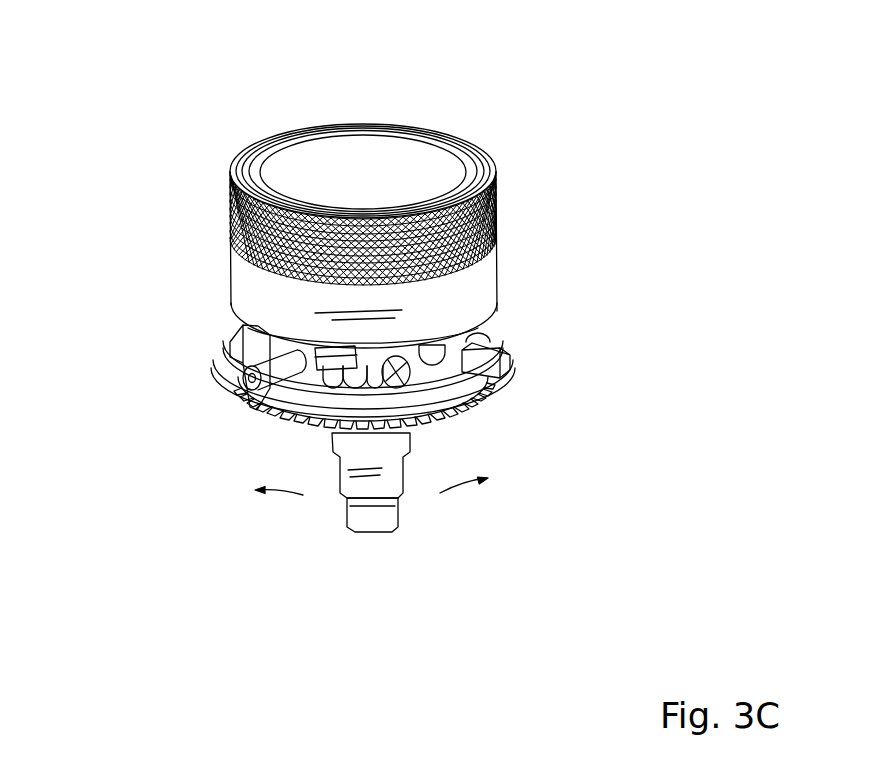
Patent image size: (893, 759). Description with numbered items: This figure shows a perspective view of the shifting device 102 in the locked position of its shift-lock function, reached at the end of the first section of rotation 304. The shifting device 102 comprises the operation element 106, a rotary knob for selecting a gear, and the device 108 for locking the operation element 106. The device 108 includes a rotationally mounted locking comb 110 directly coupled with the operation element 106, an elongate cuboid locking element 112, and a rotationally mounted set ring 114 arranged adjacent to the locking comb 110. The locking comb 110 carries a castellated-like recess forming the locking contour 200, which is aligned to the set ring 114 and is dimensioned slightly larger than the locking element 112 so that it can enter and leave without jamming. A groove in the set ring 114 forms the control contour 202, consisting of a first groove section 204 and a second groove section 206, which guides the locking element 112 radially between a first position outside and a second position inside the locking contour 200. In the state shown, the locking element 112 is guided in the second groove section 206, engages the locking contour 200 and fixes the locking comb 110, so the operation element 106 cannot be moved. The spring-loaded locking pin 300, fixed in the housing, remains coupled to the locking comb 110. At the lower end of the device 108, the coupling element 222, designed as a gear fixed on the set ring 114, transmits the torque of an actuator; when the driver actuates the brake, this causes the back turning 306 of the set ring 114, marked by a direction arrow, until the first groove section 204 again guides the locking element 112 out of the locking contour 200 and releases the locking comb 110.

The shifting device 102 is at (480, 127).
The operation element 106 is at (493, 237).
The locking contour 200 is at (478, 320).
The locking element 112 is at (508, 364).
The device for locking the operation element 108 is at (527, 389).
The second groove section 206 is at (472, 385).
The set ring 114 is at (248, 343).
The locking pin 300 is at (250, 380).
The locking comb 110 is at (287, 417).
The first section of rotation 304 is at (347, 393).
The first groove section 204 is at (337, 377).
The control contour 202 is at (423, 397).
The back turning 306 is at (443, 420).
The coupling element 222 is at (472, 383).